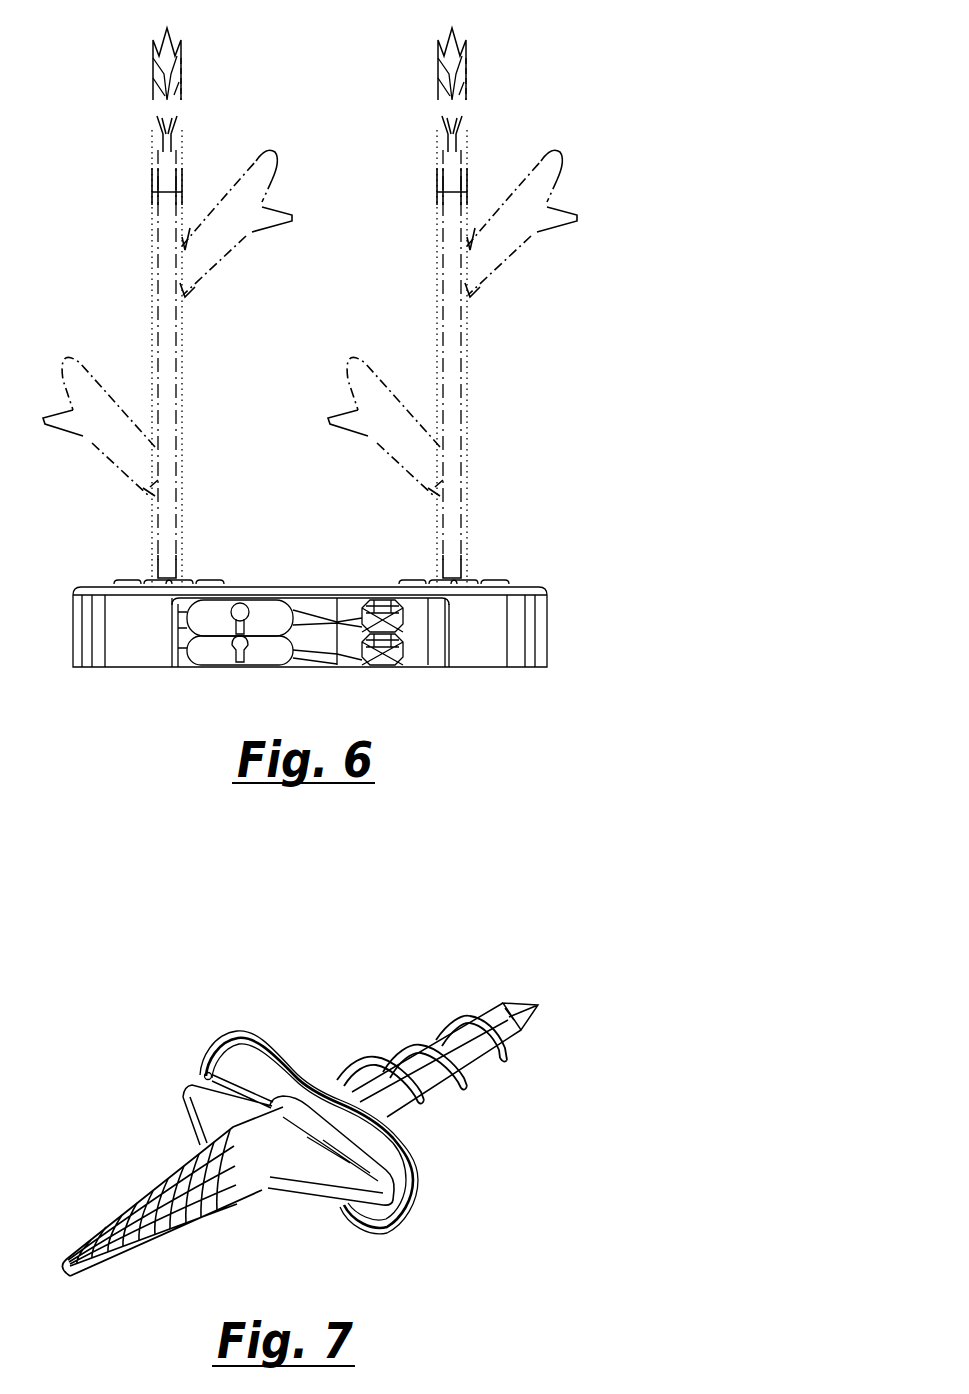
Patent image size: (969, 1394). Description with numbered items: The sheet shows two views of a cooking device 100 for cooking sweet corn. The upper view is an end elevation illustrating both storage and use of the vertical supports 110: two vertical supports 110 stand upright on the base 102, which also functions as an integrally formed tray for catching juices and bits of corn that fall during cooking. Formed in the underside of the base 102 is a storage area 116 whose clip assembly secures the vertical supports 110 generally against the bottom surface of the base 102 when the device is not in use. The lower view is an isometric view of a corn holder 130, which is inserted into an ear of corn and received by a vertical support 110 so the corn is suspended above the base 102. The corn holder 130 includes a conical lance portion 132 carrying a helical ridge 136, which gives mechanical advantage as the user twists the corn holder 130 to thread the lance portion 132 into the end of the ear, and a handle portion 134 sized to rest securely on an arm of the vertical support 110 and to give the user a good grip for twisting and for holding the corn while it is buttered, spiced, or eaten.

In FIG. 6, the cooking device 100 is at (493, 65).
In FIG. 6, the base 102 is at (537, 634).
In FIG. 6, the vertical support 110 is at (493, 248).
In FIG. 6, the storage area 116 is at (291, 669).
In FIG. 7, the corn holder 130 is at (455, 1120).
In FIG. 7, the lance portion 132 is at (514, 1018).
In FIG. 7, the handle portion 134 is at (197, 1173).
In FIG. 7, the helical ridge 136 is at (412, 1042).